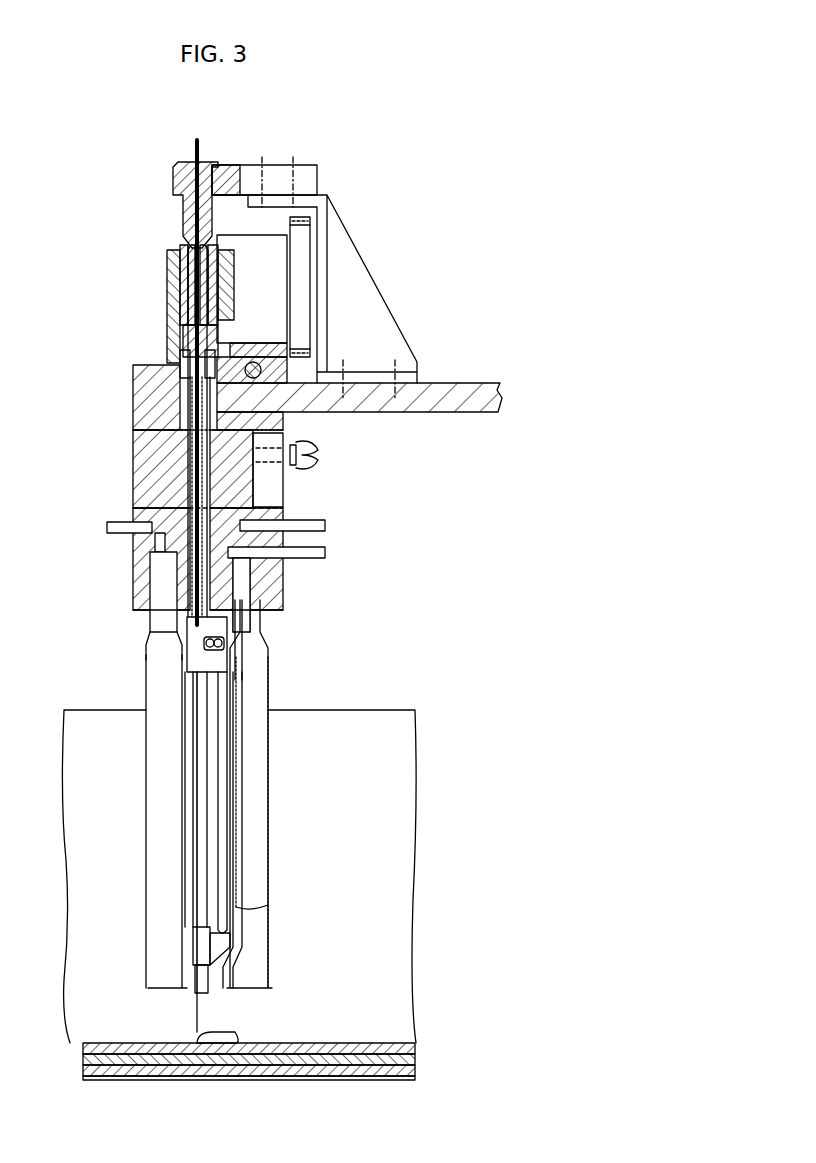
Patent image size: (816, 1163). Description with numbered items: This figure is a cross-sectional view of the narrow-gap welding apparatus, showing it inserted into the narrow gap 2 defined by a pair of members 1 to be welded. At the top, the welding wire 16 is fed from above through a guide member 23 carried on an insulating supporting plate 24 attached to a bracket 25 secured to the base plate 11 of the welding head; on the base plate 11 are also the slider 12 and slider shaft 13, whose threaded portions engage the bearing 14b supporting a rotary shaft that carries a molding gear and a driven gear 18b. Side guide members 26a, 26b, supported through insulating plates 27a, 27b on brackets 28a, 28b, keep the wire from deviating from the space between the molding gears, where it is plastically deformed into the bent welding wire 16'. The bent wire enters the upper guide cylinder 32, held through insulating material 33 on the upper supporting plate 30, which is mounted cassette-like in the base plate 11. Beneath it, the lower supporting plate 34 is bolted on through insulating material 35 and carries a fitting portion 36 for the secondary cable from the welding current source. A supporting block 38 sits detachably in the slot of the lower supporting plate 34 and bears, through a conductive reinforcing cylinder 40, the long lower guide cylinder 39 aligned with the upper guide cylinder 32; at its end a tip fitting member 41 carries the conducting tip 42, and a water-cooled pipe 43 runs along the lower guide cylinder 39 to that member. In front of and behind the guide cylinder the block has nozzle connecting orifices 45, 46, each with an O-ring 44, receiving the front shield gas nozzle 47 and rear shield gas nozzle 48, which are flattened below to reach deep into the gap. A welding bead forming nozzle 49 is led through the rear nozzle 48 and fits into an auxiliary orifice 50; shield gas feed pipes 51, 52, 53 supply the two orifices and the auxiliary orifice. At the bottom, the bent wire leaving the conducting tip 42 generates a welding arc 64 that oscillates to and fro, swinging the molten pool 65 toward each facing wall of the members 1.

The members to be welded 1 is at (72, 718).
The narrow gap 2 is at (367, 734).
The base plate 11 is at (478, 385).
The slider 12 is at (290, 372).
The slider shaft 13 is at (258, 385).
The bearing 14b is at (283, 243).
The welding wire 16 is at (170, 552).
The bent welding wire 16' is at (165, 1015).
The driven gear 18b is at (301, 257).
The guide member 23 is at (213, 163).
The supporting plate 24 is at (302, 165).
The bracket 25 is at (376, 300).
The guide member 26a is at (188, 262).
The guide member 26b is at (209, 262).
The insulating plate 27a is at (180, 292).
The insulating plate 27b is at (216, 292).
The bracket 28a is at (168, 312).
The bracket 28b is at (228, 322).
The upper supporting plate 30 is at (133, 407).
The upper guide cylinder 32 is at (183, 340).
The insulating material 33 is at (182, 352).
The lower supporting plate 34 is at (285, 500).
The insulating material 35 is at (133, 455).
The fitting portion 36 is at (318, 465).
The supporting block 38 is at (285, 520).
The lower guide cylinder 39 is at (193, 690).
The reinforcing cylinder 40 is at (188, 462).
The tip fitting member 41 is at (200, 950).
The conducting tip 42 is at (197, 988).
The water-cooled pipe 43 is at (224, 830).
The O-ring 44 is at (284, 598).
The nozzle connecting orifice 45 is at (150, 572).
The nozzle connecting orifice 46 is at (270, 568).
The front shield gas nozzle 47 is at (148, 828).
The rear shield gas nozzle 48 is at (262, 692).
The welding bead forming nozzle 49 is at (250, 662).
The auxiliary orifice 50 is at (261, 514).
The shield gas feed pipe 51 is at (118, 534).
The shield gas feed pipe 52 is at (326, 553).
The shield gas feed pipe 53 is at (326, 525).
The welding arc 64 is at (209, 1033).
The molten pool 65 is at (212, 1043).